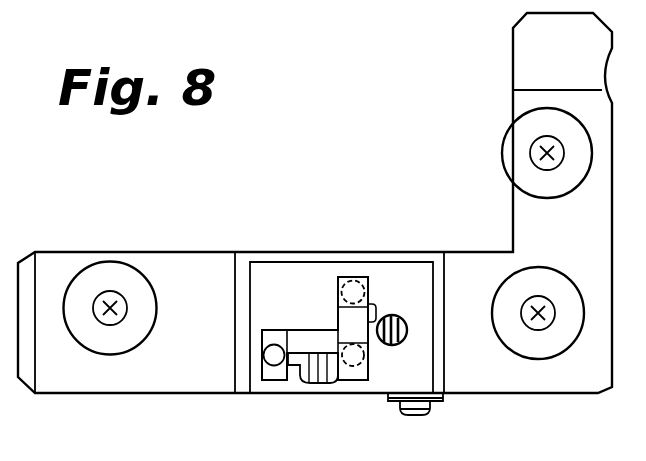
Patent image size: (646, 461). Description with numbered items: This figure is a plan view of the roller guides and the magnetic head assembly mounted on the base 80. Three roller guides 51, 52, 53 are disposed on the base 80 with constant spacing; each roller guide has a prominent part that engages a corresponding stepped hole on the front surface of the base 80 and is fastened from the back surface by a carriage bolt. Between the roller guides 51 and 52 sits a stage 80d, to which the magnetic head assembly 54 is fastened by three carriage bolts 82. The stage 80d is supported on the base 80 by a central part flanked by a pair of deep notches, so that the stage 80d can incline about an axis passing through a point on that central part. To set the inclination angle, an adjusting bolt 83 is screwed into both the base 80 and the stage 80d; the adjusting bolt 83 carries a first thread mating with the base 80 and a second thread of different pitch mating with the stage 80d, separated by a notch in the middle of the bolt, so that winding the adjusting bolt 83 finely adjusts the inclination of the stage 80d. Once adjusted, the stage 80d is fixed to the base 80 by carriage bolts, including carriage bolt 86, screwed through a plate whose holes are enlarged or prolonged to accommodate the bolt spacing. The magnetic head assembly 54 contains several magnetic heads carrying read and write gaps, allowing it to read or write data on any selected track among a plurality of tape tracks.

The roller guide 51 is at (98, 253).
The roller guide 52 is at (523, 360).
The roller guide 53 is at (507, 120).
The magnetic head assembly 54 is at (292, 316).
The base 80 is at (92, 379).
The stage 80d is at (303, 285).
The carriage bolts 82 is at (355, 280).
The adjusting bolt 83 is at (393, 315).
The carriage bolt 86 is at (423, 417).